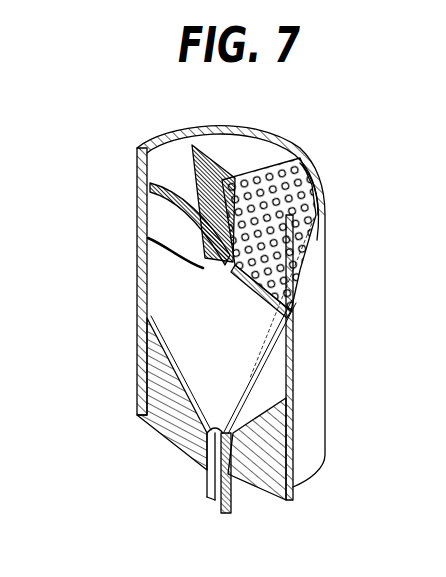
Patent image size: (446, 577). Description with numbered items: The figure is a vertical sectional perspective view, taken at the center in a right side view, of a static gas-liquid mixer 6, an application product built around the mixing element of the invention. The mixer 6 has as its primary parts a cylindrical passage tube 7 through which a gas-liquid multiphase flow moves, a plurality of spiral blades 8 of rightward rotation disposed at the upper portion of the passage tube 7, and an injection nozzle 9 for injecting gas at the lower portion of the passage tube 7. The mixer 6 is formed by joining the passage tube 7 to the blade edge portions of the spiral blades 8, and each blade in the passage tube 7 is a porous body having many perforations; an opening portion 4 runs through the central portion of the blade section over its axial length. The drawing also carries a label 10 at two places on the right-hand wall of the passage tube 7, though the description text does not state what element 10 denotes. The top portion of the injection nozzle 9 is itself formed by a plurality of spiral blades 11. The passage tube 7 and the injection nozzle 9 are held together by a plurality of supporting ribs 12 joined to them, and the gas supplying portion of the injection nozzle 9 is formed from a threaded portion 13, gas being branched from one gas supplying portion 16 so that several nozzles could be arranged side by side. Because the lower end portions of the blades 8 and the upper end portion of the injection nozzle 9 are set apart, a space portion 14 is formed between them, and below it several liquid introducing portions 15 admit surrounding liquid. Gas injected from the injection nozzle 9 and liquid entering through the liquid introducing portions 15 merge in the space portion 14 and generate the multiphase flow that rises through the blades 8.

The opening portion 4 is at (208, 282).
The static gas-liquid mixer 6 is at (284, 130).
The cylindrical passage tube 7 is at (321, 166).
The spiral blades 8 is at (318, 198).
The injection nozzle 9 is at (273, 413).
The inner wall 10 is at (320, 258).
The spiral blades 11 is at (235, 460).
The supporting ribs 12 is at (270, 366).
The threaded portion 13 is at (229, 503).
The space portion 14 is at (195, 328).
The liquid introducing portions 15 is at (215, 408).
The gas supplying portion 16 is at (213, 505).